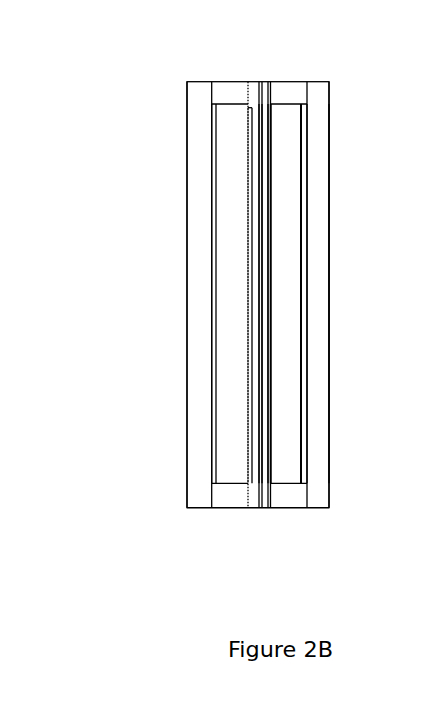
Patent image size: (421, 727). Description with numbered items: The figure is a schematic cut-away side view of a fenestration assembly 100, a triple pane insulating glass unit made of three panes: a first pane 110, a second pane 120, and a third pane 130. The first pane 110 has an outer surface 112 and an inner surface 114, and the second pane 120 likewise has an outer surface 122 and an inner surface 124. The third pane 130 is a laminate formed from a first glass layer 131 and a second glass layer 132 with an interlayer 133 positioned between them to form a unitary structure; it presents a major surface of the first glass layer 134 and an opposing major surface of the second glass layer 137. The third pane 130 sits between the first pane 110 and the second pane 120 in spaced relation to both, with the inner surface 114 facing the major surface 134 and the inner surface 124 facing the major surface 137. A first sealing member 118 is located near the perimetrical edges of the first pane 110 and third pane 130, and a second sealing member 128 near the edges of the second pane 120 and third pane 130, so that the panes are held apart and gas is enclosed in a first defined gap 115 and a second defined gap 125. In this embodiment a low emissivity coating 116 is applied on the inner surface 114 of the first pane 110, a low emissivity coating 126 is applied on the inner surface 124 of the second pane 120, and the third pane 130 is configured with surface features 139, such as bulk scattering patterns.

The fenestration assembly 100 is at (182, 572).
The first pane 110 is at (329, 105).
The outer surface 112 is at (333, 166).
The inner surface 114 is at (307, 207).
The first defined gap 115 is at (288, 257).
The low emissivity coating 116 is at (302, 283).
The first sealing member 118 is at (297, 508).
The second pane 120 is at (187, 105).
The outer surface 122 is at (189, 148).
The inner surface 124 is at (210, 196).
The second defined gap 125 is at (231, 253).
The low emissivity coating 126 is at (216, 387).
The second sealing member 128 is at (223, 508).
The third pane 130 is at (261, 60).
The first glass layer 131 is at (270, 357).
The second glass layer 132 is at (253, 388).
The interlayer 133 is at (262, 422).
The major surface of the first glass layer 134 is at (271, 294).
The major surface of the second glass layer 137 is at (247, 316).
The surface features 139 is at (248, 418).